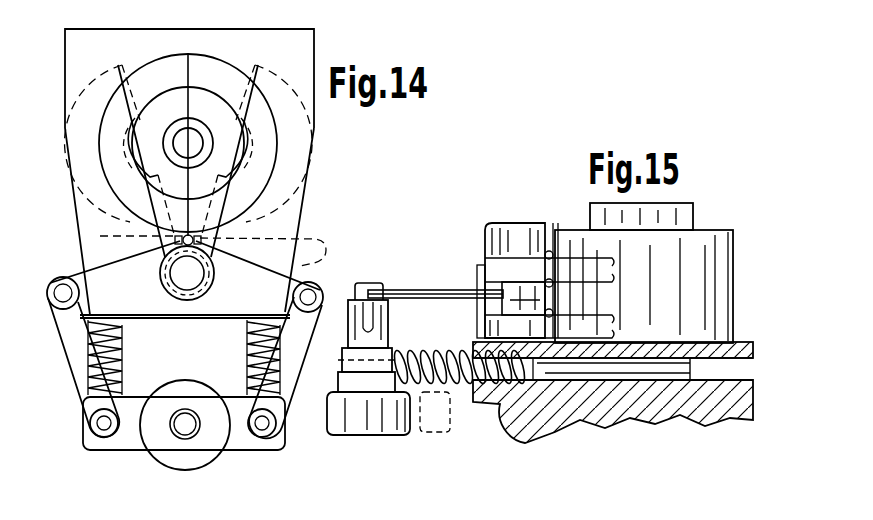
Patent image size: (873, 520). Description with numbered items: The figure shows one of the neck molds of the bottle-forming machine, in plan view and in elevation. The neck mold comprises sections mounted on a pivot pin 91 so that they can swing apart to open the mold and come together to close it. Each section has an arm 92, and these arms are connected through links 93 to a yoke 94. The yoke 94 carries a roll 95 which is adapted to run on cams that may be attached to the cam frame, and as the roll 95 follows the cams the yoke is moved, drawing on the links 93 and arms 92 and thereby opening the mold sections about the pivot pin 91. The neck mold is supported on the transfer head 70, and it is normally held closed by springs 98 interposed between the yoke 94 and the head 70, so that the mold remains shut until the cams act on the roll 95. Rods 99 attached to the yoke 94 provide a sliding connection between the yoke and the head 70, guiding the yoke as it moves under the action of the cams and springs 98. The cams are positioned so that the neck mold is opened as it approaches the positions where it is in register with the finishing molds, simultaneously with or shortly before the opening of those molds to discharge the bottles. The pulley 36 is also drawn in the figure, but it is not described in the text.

In FIG. 14, the pulley 36 is at (213, 67).
In FIG. 15, the pulley 36 is at (712, 243).
In FIG. 15, the head 70 is at (523, 427).
In FIG. 14, the pivot pin 91 is at (183, 282).
In FIG. 15, the pivot pin 91 is at (519, 224).
In FIG. 14, the arm 92 is at (100, 278).
In FIG. 15, the arm 92 is at (518, 308).
In FIG. 14, the links 93 is at (73, 355).
In FIG. 15, the links 93 is at (420, 289).
In FIG. 14, the yoke 94 is at (117, 440).
In FIG. 15, the yoke 94 is at (347, 312).
In FIG. 14, the roll 95 is at (200, 468).
In FIG. 15, the roll 95 is at (345, 428).
In FIG. 14, the springs 98 is at (250, 348).
In FIG. 15, the springs 98 is at (406, 350).
In FIG. 15, the rods 99 is at (688, 368).